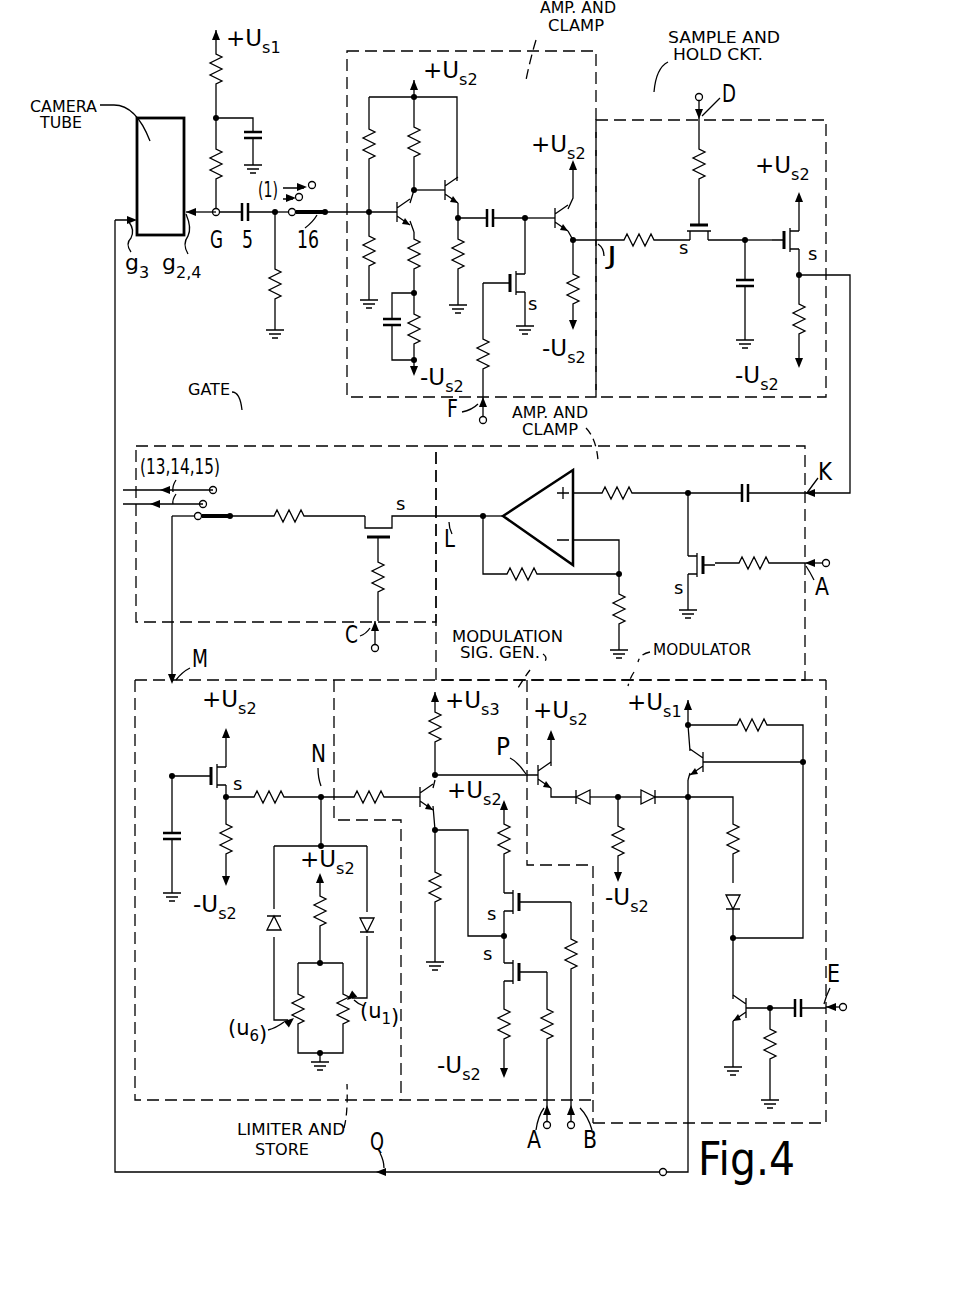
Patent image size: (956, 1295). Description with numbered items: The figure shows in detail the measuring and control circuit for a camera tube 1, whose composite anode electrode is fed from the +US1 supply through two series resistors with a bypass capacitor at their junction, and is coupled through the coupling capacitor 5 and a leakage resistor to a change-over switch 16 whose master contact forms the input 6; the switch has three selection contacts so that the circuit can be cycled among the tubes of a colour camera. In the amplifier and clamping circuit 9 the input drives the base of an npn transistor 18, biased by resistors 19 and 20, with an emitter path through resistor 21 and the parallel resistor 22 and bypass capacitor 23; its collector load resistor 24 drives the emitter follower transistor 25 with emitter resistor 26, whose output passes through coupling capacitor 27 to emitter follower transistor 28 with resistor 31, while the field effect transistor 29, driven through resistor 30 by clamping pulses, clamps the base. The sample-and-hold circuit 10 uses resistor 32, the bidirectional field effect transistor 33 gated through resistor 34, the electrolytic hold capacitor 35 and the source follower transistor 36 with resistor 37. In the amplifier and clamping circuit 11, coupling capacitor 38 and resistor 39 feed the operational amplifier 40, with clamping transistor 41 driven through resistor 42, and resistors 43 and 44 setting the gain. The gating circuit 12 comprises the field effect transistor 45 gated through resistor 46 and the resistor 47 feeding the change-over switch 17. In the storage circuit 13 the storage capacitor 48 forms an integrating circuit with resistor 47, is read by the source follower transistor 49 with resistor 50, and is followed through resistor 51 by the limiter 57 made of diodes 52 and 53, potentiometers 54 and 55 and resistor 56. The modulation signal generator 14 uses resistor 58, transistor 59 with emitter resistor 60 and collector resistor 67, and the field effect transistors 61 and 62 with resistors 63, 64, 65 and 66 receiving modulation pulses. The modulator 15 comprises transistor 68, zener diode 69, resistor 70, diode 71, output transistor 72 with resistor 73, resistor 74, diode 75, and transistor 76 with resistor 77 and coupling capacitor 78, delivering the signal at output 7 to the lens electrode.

The camera tube 1 is at (166, 116).
The coupling capacitor 5 is at (249, 218).
The input 6 is at (322, 210).
The output 7 is at (658, 1170).
The amplifier and clamping circuit 9 is at (598, 68).
The sample-and-hold circuit 10 is at (645, 120).
The amplifier and clamping circuit 11 is at (614, 446).
The gating circuit 12 is at (270, 442).
The storage circuit including a limiter 13 is at (244, 1100).
The modulation signal generator 14 is at (490, 1102).
The modulator 15 is at (620, 1126).
The change-over switch 16 is at (336, 212).
The change-over switch 17 is at (211, 522).
The npn transistor 18 is at (393, 206).
The resistor 19 is at (372, 258).
The resistor 20 is at (390, 143).
The resistor 21 is at (422, 263).
The resistor 22 is at (418, 330).
The high-frequency bypass capacitor 23 is at (390, 335).
The resistor 24 is at (422, 143).
The npn transistor 25 is at (445, 182).
The resistor 26 is at (466, 260).
The coupling capacitor 27 is at (504, 212).
The npn transistor 28 is at (553, 208).
The field effect transistor 29 is at (523, 278).
The resistor 30 is at (490, 356).
The resistor 31 is at (568, 298).
The resistor 32 is at (634, 234).
The field effect transistor 33 is at (701, 240).
The resistor 34 is at (704, 170).
The electrolytic capacitor 35 is at (740, 284).
The field effect transistor 36 is at (788, 230).
The resistor 37 is at (794, 324).
The coupling capacitor 38 is at (745, 479).
The resistor 39 is at (622, 484).
The operational amplifier 40 is at (528, 500).
The field effect transistor 41 is at (686, 566).
The resistor 42 is at (758, 582).
The resistor 43 is at (262, 142).
The feedback resistor 44 is at (268, 286).
The field effect transistor 45 is at (378, 524).
The resistor 46 is at (370, 570).
The resistor 47 is at (288, 504).
The electrolytic capacitor 48 is at (176, 836).
The field effect transistor 49 is at (226, 768).
The resistor 50 is at (232, 838).
The resistor 51 is at (272, 791).
The diode 52 is at (366, 930).
The diode 53 is at (262, 931).
The potentiometer 54 is at (346, 1020).
The potentiometer 55 is at (298, 1024).
The resistor 56 is at (326, 910).
The limiter 57 is at (300, 905).
The resistor 58 is at (366, 788).
The npn transistor 59 is at (416, 788).
The resistor 60 is at (420, 884).
The field effect transistor 61 is at (507, 979).
The field effect transistor 62 is at (520, 897).
The resistor 63 is at (498, 1018).
The resistor 64 is at (542, 1018).
The resistor 65 is at (502, 848).
The resistor 66 is at (566, 956).
The resistor 67 is at (430, 730).
The npn transistor 68 is at (544, 775).
The zener diode 69 is at (586, 806).
The resistor 70 is at (624, 846).
The diode 71 is at (651, 788).
The npn transistor 72 is at (691, 760).
The resistor 73 is at (740, 724).
The resistor 74 is at (738, 842).
The diode 75 is at (741, 900).
The npn transistor 76 is at (738, 1008).
The resistor 77 is at (774, 1048).
The coupling capacitor 78 is at (794, 998).